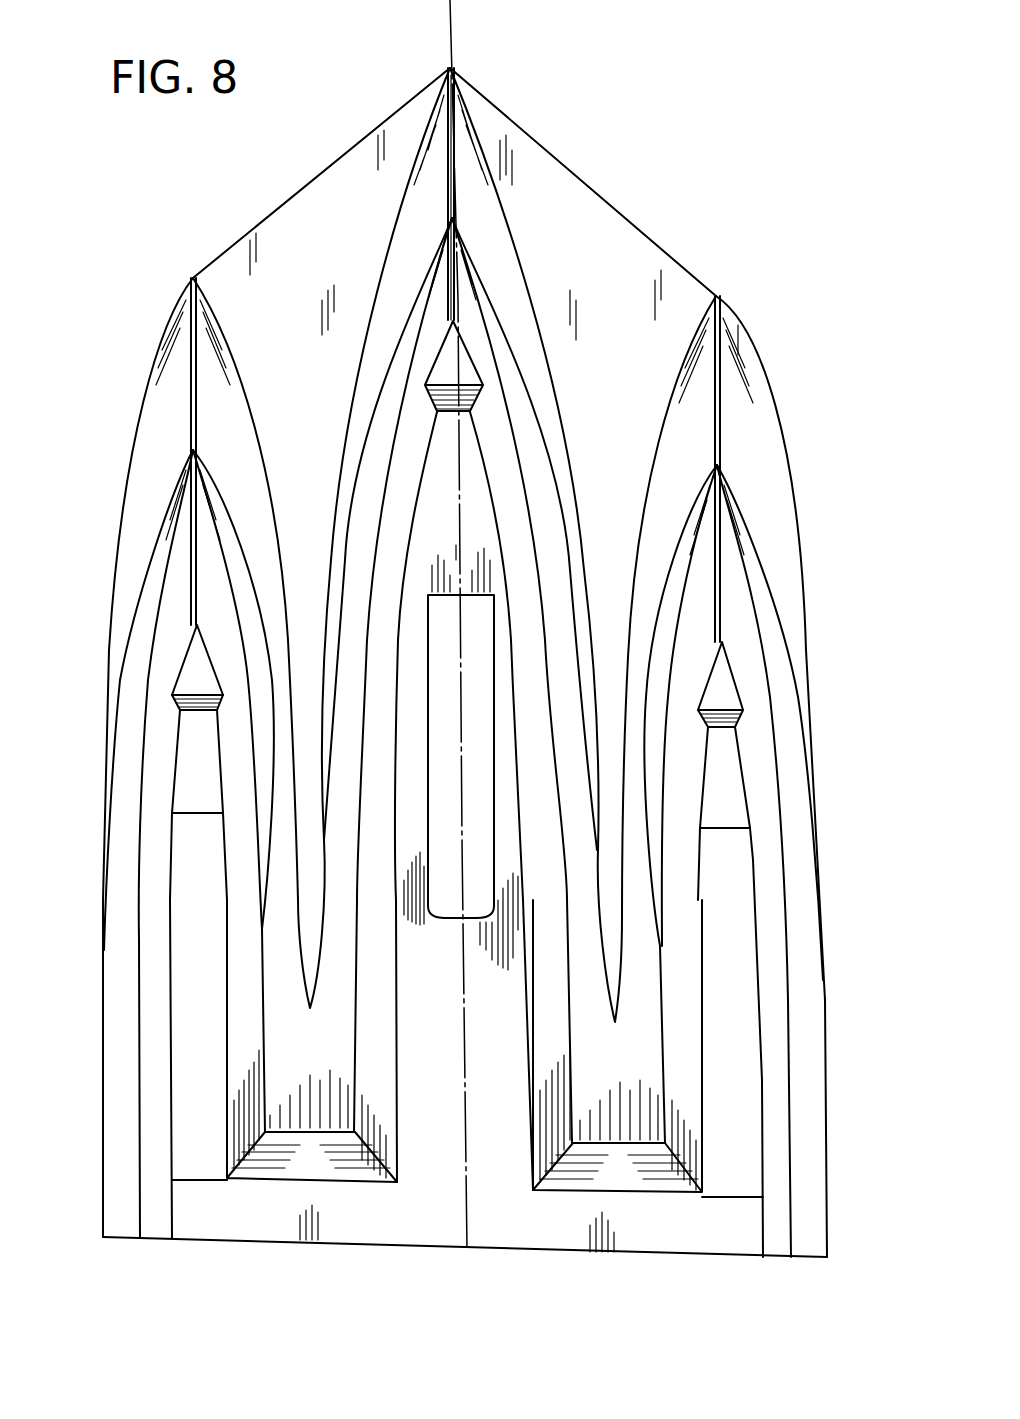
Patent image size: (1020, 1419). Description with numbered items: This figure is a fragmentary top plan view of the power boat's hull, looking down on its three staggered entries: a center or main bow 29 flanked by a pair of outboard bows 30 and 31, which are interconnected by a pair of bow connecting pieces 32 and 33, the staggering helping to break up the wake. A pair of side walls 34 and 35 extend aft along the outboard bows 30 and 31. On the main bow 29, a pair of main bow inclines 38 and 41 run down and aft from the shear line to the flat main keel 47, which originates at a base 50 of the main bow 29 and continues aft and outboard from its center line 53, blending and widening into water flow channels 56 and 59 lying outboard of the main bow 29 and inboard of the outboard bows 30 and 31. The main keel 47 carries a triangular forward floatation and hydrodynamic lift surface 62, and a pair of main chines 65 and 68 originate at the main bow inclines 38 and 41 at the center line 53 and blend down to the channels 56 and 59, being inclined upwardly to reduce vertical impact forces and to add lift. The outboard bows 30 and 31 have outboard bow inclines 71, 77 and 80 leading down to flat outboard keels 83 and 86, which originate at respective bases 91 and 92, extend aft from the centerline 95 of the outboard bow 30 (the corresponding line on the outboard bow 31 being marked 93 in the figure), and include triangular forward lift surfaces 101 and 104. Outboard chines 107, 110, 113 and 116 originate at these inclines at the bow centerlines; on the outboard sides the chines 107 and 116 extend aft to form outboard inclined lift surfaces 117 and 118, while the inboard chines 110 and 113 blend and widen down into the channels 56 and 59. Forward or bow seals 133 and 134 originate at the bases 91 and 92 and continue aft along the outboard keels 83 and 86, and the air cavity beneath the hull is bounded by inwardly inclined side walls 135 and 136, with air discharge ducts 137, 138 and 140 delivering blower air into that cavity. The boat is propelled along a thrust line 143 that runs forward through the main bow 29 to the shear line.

The main bow 29 is at (454, 182).
The outboard bow 30 is at (189, 588).
The outboard bow 31 is at (723, 648).
The bow connecting piece 32 is at (334, 248).
The bow connecting piece 33 is at (597, 258).
The side wall 34 is at (103, 1010).
The side wall 35 is at (828, 1035).
The main bow incline 38 is at (432, 288).
The main bow incline 41 is at (467, 302).
The main keel 47 is at (513, 477).
The base of the main bow 50 is at (455, 222).
The center line of the main bow 53 is at (447, 160).
The water flow channel 56 is at (300, 600).
The water flow channel 59 is at (612, 603).
The forward floatation and hydrodynamic lift surface 62 is at (470, 373).
The main chine 65 is at (380, 430).
The main chine 68 is at (525, 408).
The outboard bow incline 71 is at (240, 645).
The outboard bow incline 77 is at (722, 640).
The outboard bow incline 80 is at (760, 667).
The outboard keel 83 is at (243, 847).
The outboard keel 86 is at (772, 862).
The base of the outboard bow 91 is at (196, 448).
The base of the outboard bow 92 is at (725, 470).
The right blade spine 93 is at (720, 420).
The centerline of the outboard bow 95 is at (200, 370).
The forward floatation and hydrodynamic lift surface 101 is at (215, 685).
The forward floatation and hydrodynamic lift surface 104 is at (730, 690).
The outboard chine 107 is at (130, 718).
The outboard chine 110 is at (235, 548).
The outboard chine 113 is at (658, 706).
The outboard chine 116 is at (790, 803).
The outboard inclined lift surface 117 is at (115, 1108).
The outboard inclined lift surface 118 is at (810, 1133).
The forward bow seal 133 is at (201, 714).
The forward bow seal 134 is at (727, 730).
The side wall of the air cavity 135 is at (150, 1158).
The side wall of the air cavity 136 is at (780, 1198).
The air discharge duct 137 is at (440, 922).
The air discharge duct 138 is at (210, 1182).
The air discharge duct 140 is at (720, 1198).
The thrust line 143 is at (446, 22).